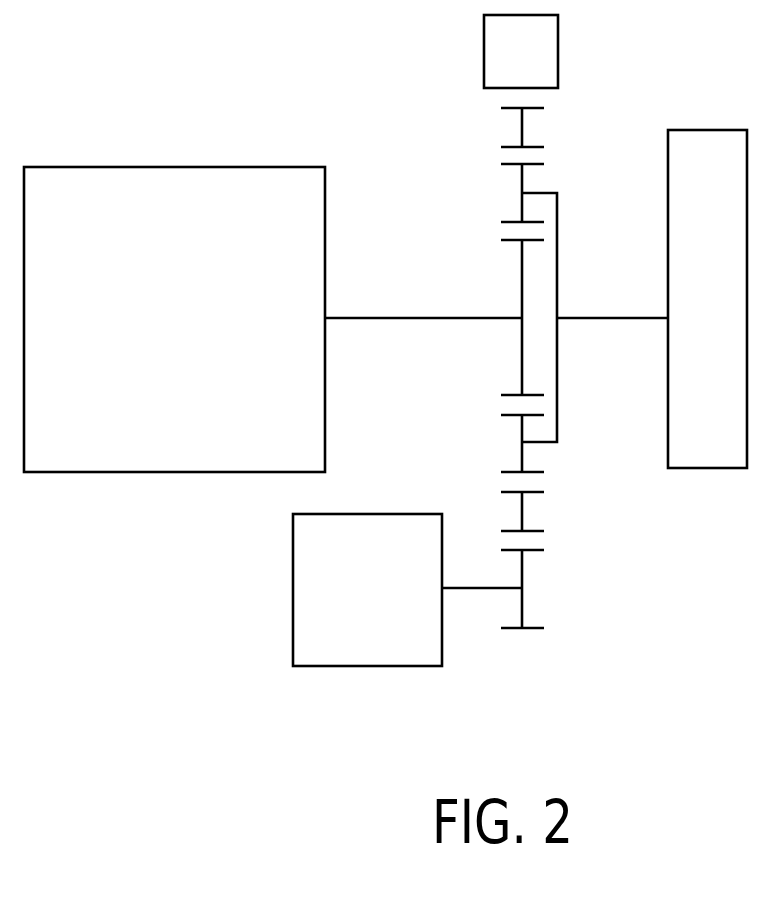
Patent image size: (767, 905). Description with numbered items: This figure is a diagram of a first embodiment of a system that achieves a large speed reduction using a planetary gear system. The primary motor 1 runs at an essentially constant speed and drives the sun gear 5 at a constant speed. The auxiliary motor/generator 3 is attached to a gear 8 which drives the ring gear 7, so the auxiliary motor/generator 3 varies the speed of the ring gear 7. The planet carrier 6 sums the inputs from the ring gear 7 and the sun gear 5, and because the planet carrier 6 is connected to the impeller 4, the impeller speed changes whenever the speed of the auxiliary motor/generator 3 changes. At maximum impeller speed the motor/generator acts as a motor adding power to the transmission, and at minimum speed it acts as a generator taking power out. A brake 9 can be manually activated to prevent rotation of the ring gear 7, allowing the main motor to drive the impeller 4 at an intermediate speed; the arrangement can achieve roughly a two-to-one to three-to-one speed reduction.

The primary motor 1 is at (174, 319).
The auxiliary motor/generator 3 is at (407, 590).
The impeller 4 is at (707, 299).
The sun gear 5 is at (423, 291).
The planet carrier 6 is at (612, 291).
The ring gear 7 is at (521, 328).
The gear 8 is at (544, 650).
The brake 9 is at (539, 51).